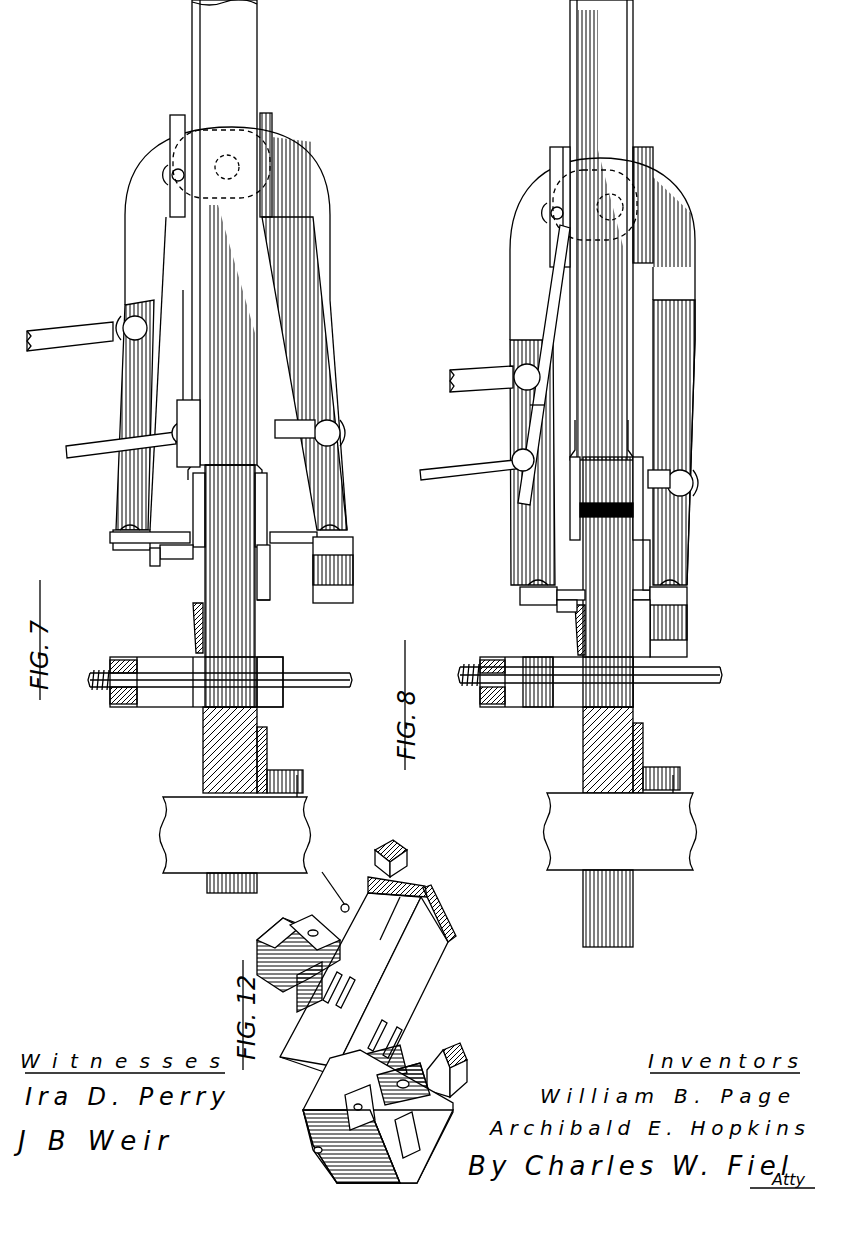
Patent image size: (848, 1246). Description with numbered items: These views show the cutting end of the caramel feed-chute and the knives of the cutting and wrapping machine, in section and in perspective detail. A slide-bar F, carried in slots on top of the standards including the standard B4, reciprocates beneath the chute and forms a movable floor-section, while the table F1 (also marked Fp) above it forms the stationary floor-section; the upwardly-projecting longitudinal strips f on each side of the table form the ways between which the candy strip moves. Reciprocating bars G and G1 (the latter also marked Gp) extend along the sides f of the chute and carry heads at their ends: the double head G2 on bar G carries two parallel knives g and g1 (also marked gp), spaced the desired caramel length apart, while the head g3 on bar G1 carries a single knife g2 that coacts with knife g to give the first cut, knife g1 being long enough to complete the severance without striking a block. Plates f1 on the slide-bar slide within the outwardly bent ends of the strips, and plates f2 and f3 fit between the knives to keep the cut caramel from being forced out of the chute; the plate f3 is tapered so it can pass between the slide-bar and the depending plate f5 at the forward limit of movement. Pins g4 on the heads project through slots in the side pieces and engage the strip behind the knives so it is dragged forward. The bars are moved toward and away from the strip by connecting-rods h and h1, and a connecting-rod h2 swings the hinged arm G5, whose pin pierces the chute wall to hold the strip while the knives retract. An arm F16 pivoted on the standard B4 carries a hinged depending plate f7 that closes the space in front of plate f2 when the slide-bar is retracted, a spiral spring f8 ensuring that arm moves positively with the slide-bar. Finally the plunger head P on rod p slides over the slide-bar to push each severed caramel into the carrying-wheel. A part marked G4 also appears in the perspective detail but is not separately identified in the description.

In FIG. 7, the table F1 is at (225, 240).
In FIG. 8, the table F1 is at (601, 230).
In FIG. 7, the longitudinal strips f is at (196, 36).
In FIG. 12, the longitudinal strips f is at (398, 943).
In FIG. 7, the reciprocating bar G1 is at (124, 248).
In FIG. 8, the reciprocating bar G1 is at (510, 268).
In FIG. 7, the connecting-rod h is at (62, 322).
In FIG. 8, the connecting-rod h is at (462, 362).
In FIG. 12, the connecting-rod h is at (409, 1136).
In FIG. 7, the connecting-rod h2 is at (90, 432).
In FIG. 8, the connecting-rod h2 is at (476, 454).
In FIG. 12, the connecting-rod h2 is at (328, 888).
In FIG. 7, the arm G5 is at (178, 360).
In FIG. 8, the arm G5 is at (540, 413).
In FIG. 12, the arm G5 is at (347, 890).
In FIG. 7, the reciprocating bar G is at (338, 332).
In FIG. 8, the reciprocating bar G is at (665, 345).
In FIG. 7, the connecting-rod h1 is at (309, 417).
In FIG. 8, the connecting-rod h1 is at (673, 467).
In FIG. 7, the upwardly-projecting plates f1 is at (192, 488).
In FIG. 12, the upwardly-projecting plates f1 is at (348, 975).
In FIG. 7, the table Fp is at (230, 586).
In FIG. 8, the table Fp is at (606, 563).
In FIG. 7, the head g3 is at (112, 536).
In FIG. 8, the head g3 is at (525, 594).
In FIG. 12, the head g3 is at (298, 946).
In FIG. 7, the pins g4 is at (128, 528).
In FIG. 8, the pins g4 is at (535, 580).
In FIG. 12, the pins g4 is at (462, 1100).
In FIG. 7, the plate f2 is at (213, 558).
In FIG. 8, the plate f2 is at (640, 620).
In FIG. 7, the knife g is at (270, 560).
In FIG. 8, the knife g is at (655, 590).
In FIG. 12, the knife g is at (343, 1062).
In FIG. 7, the knife g2 is at (178, 560).
In FIG. 8, the knife g2 is at (565, 612).
In FIG. 12, the knife g2 is at (297, 987).
In FIG. 7, the plate f3 is at (195, 565).
In FIG. 8, the plate f3 is at (575, 625).
In FIG. 12, the plate f3 is at (299, 1043).
In FIG. 7, the head G2 is at (353, 575).
In FIG. 8, the head G2 is at (687, 610).
In FIG. 7, the depending plate f5 is at (190, 628).
In FIG. 8, the depending plate f5 is at (560, 598).
In FIG. 7, the knife g1 is at (268, 612).
In FIG. 8, the knife g1 is at (650, 657).
In FIG. 7, the rod p is at (335, 690).
In FIG. 8, the rod p is at (700, 683).
In FIG. 7, the depending plate f7 is at (283, 665).
In FIG. 7, the plunger head P is at (283, 703).
In FIG. 8, the plunger head P is at (583, 705).
In FIG. 7, the arm F16 is at (270, 740).
In FIG. 8, the arm F16 is at (645, 735).
In FIG. 7, the spring f8 is at (305, 802).
In FIG. 8, the spring f8 is at (680, 780).
In FIG. 7, the standard B4 is at (178, 873).
In FIG. 8, the standard B4 is at (545, 810).
In FIG. 12, the slide-bar F is at (455, 885).
In FIG. 12, the reciprocating bar Gp is at (421, 964).
In FIG. 12, the block G4 is at (330, 1095).
In FIG. 12, the knife gp is at (339, 1146).